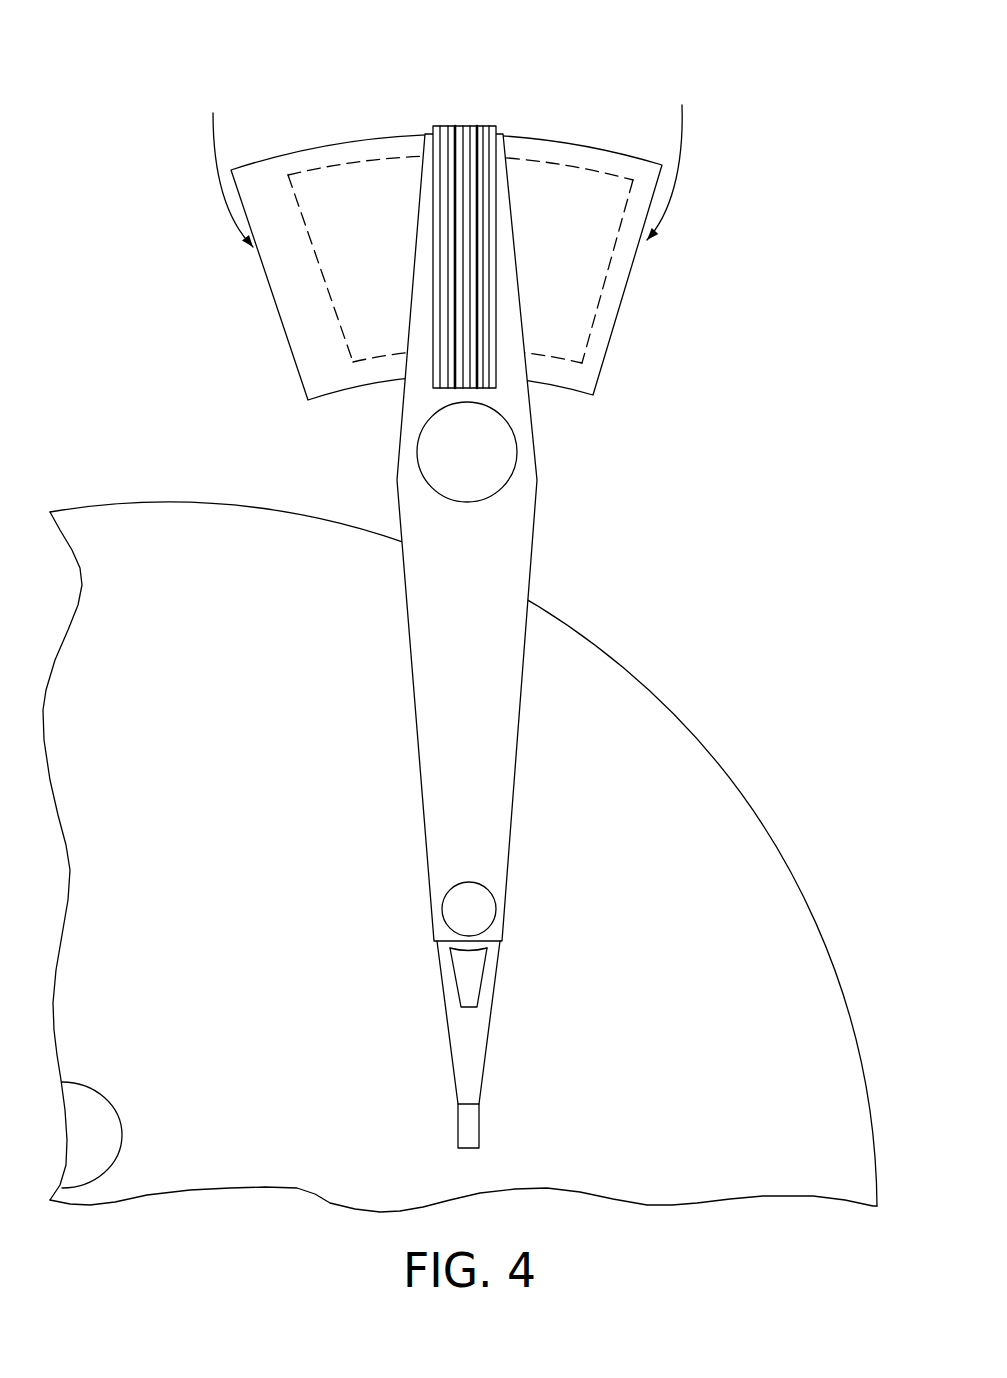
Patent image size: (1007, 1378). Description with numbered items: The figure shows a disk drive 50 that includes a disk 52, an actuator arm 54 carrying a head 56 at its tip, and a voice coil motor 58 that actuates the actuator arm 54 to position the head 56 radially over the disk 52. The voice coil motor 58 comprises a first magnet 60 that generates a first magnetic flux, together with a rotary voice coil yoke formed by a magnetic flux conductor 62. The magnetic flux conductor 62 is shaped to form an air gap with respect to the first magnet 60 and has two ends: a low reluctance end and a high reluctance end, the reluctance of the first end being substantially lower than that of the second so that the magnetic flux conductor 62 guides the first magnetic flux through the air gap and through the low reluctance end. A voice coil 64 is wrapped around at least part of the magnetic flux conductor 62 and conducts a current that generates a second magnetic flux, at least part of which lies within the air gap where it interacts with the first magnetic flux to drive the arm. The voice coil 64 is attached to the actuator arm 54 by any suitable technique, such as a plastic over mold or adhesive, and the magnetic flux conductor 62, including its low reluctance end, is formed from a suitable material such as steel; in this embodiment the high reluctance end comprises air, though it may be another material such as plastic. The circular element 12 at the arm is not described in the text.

The disk drive 50 is at (455, 606).
The disk 52 is at (662, 683).
The actuator arm 54 is at (482, 609).
The head 56 is at (480, 1130).
The voice coil motor 58 is at (452, 209).
The first magnet 60 is at (598, 204).
The magnetic flux conductor 62 is at (620, 315).
The voice coil 64 is at (448, 125).
The pivot bearing 12 is at (457, 463).